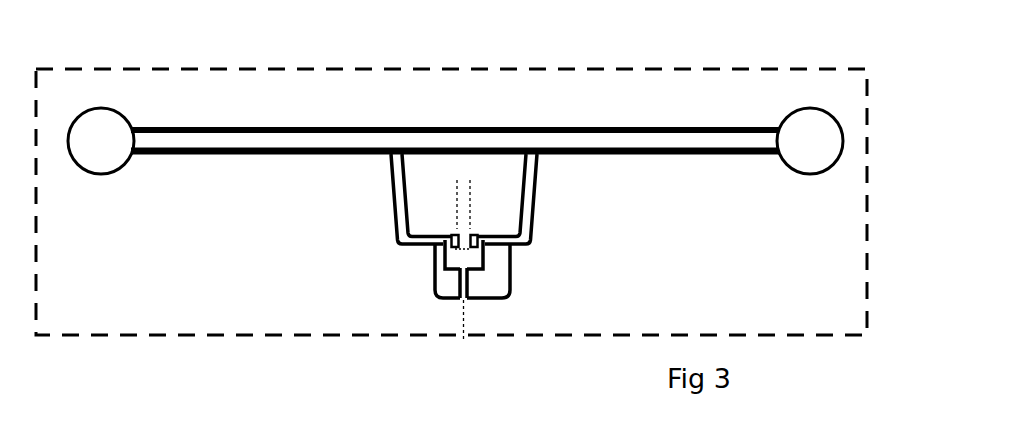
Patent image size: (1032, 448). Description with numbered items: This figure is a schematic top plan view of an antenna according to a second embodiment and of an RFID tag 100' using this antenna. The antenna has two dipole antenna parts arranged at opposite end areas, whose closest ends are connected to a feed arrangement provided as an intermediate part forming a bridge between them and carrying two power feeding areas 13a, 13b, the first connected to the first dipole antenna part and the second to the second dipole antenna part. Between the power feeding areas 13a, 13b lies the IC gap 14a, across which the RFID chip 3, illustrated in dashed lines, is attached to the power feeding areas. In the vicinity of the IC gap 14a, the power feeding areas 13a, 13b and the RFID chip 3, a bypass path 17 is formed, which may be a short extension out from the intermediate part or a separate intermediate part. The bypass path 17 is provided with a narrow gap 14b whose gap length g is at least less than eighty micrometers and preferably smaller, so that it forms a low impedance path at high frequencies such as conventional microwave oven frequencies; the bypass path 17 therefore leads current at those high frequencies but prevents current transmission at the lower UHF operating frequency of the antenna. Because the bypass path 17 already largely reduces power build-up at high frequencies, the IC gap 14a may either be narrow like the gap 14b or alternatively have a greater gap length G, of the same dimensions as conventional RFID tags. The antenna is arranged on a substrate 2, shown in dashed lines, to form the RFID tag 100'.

The RFID tag 100' is at (451, 190).
The substrate 2 is at (140, 313).
The RFID chip 3 is at (481, 233).
The first power feeding area 13a is at (450, 240).
The second power feeding area 13b is at (481, 242).
The IC gap 14a is at (469, 233).
The narrow gap 14b is at (469, 298).
The bypass path 17 is at (433, 290).
The gap length G is at (462, 203).
The gap length g is at (463, 329).